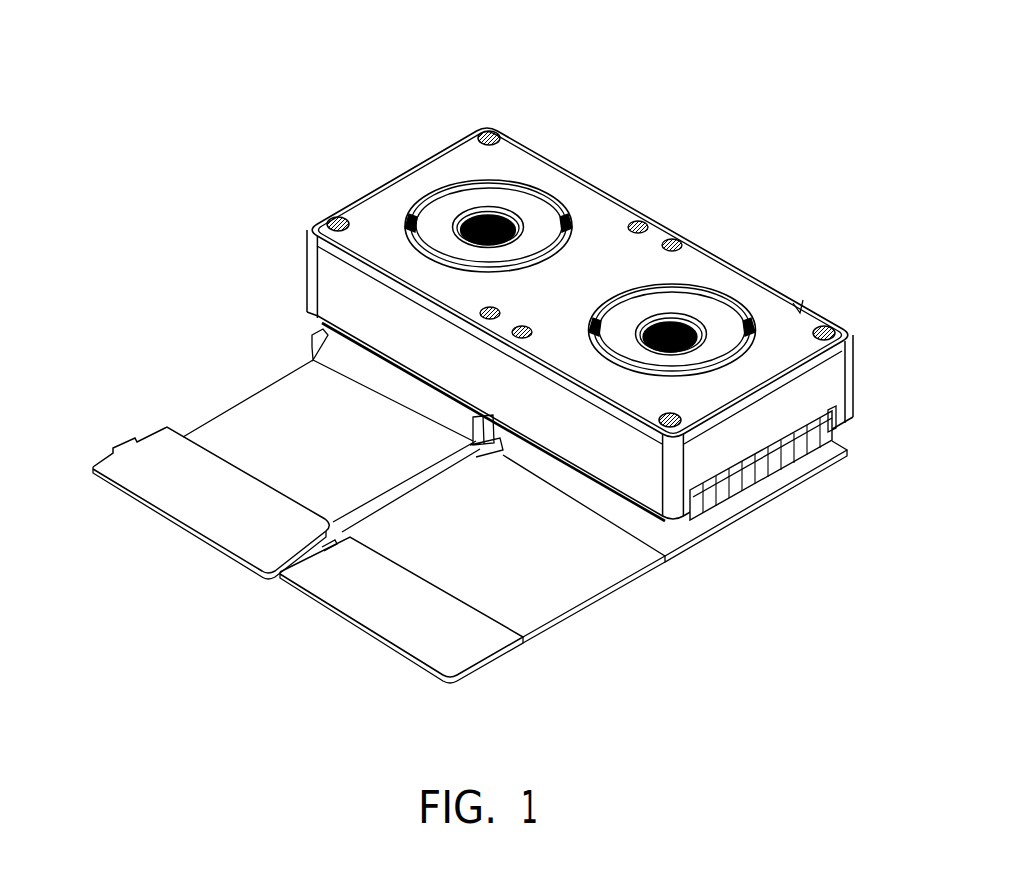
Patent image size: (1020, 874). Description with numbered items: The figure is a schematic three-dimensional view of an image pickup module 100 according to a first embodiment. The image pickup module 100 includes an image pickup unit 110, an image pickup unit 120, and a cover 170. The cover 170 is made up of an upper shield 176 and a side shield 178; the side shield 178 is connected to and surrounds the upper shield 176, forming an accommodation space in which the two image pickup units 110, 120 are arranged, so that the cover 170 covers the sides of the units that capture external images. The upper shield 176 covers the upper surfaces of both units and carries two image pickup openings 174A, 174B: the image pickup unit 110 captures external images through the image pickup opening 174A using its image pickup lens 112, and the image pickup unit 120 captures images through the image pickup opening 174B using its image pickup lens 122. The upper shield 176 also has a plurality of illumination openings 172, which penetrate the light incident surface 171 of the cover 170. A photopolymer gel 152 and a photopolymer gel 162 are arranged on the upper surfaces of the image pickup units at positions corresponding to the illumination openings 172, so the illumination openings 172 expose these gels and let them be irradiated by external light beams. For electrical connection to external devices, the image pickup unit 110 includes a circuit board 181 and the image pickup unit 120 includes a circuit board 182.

The image pickup module 100 is at (485, 371).
The image pickup unit 110 is at (508, 164).
The image pickup lens 112 is at (538, 210).
The image pickup unit 120 is at (694, 268).
The image pickup lens 122 is at (722, 316).
The photopolymer gel 152 is at (495, 131).
The photopolymer gel 162 is at (676, 239).
The cover 170 is at (586, 200).
The light incident surface 171 is at (591, 391).
The upper shield 176 is at (798, 306).
The illumination openings 172 is at (488, 130).
The image pickup opening 174A is at (458, 180).
The image pickup opening 174B is at (704, 285).
The side shield 178 is at (382, 180).
The circuit board 181 is at (262, 418).
The circuit board 182 is at (557, 580).